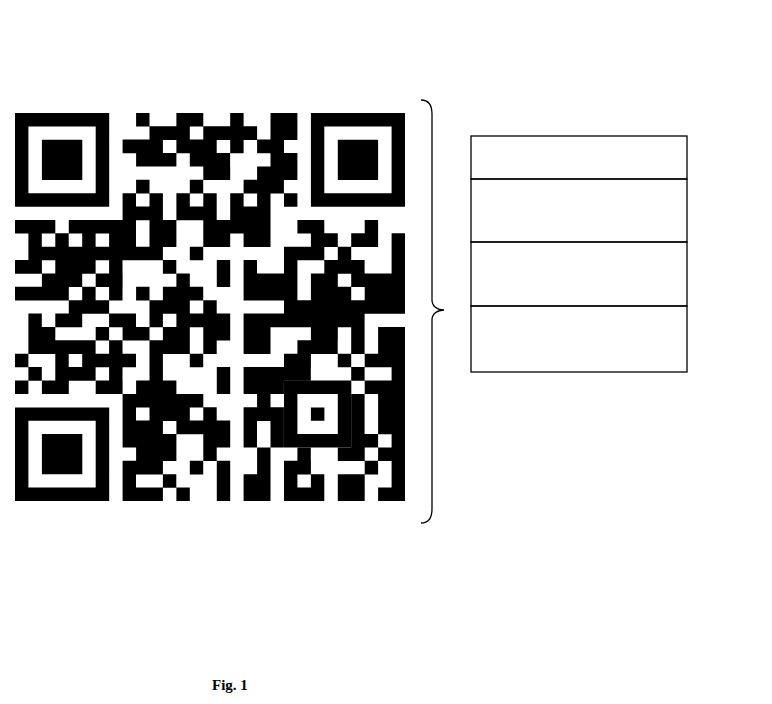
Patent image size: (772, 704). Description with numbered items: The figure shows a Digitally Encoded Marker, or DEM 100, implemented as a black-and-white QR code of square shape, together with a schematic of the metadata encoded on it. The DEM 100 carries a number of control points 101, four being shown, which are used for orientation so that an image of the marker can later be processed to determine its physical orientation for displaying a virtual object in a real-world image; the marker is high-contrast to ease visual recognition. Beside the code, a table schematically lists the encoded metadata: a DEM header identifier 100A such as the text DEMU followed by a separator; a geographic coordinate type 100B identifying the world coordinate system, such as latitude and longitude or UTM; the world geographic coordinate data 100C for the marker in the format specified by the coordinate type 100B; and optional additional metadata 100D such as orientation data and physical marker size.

The digitally encoded marker (DEM) 100 is at (228, 317).
The control points 101 is at (48, 103).
The DEM header identifier 100A is at (619, 157).
The geographic coordinate type 100B is at (618, 210).
The world geographic coordinate data 100C is at (618, 274).
The optional additional metadata 100D is at (619, 339).